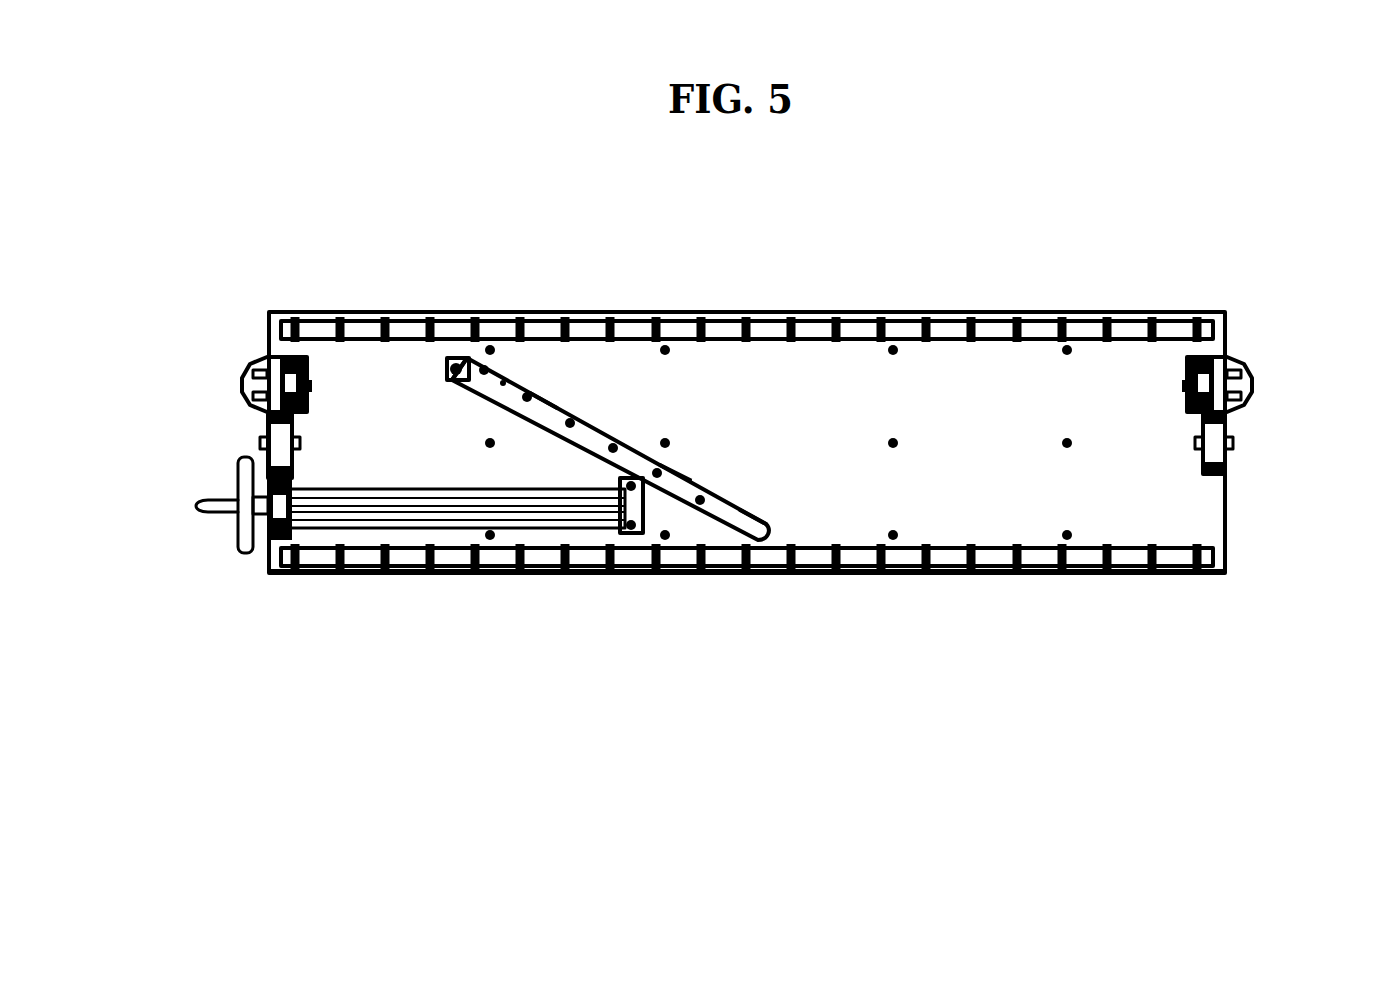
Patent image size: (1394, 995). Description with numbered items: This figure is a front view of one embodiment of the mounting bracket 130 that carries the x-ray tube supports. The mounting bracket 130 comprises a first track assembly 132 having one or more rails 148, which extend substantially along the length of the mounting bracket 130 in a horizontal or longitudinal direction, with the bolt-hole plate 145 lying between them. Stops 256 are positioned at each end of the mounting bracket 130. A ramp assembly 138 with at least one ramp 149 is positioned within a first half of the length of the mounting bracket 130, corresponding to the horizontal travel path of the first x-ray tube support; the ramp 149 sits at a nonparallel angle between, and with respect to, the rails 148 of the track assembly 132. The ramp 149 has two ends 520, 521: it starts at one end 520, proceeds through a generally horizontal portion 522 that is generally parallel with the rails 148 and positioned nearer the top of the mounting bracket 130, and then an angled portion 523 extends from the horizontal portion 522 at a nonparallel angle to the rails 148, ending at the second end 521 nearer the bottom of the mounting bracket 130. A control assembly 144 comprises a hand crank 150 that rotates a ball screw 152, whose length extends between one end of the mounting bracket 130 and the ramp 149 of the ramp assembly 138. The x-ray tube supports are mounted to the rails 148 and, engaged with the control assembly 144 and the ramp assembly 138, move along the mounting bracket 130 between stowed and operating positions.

The mounting bracket 130 is at (996, 291).
The first track assembly 132 is at (1000, 570).
The ramp assembly 138 is at (540, 378).
The control assembly 144 is at (186, 509).
The mounting plate 145 is at (764, 377).
The rails 148 is at (810, 336).
The ramp 149 is at (683, 505).
The hand crank 150 is at (243, 556).
The ball screw 152 is at (427, 503).
The stops 256 is at (236, 383).
The first end 520 is at (450, 370).
The second end 521 is at (760, 541).
The horizontal portion 522 is at (460, 357).
The angled portion 523 is at (557, 398).